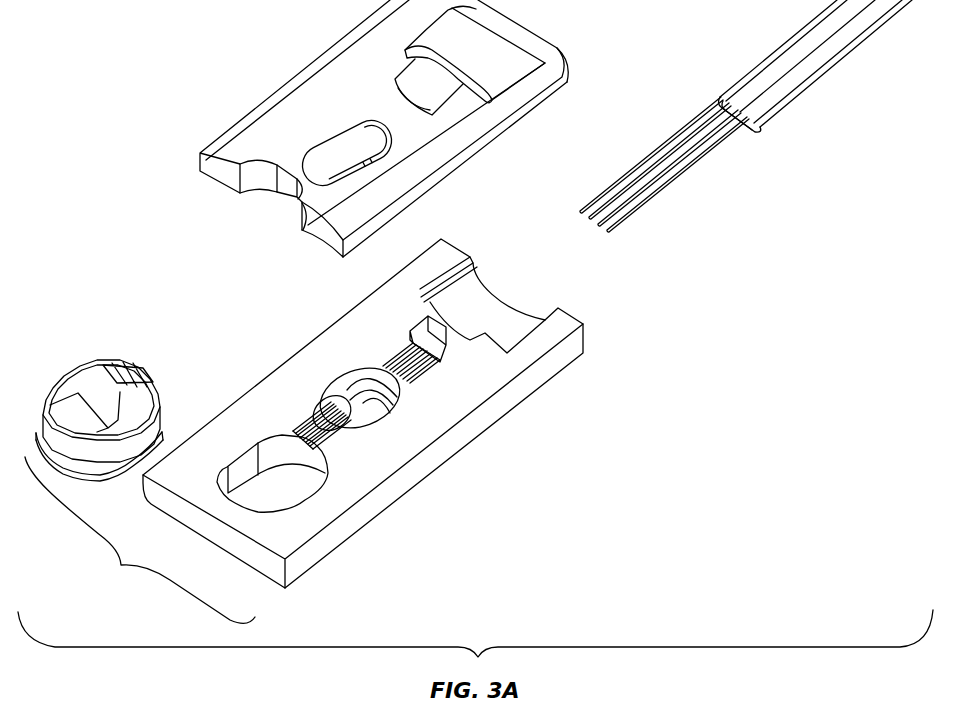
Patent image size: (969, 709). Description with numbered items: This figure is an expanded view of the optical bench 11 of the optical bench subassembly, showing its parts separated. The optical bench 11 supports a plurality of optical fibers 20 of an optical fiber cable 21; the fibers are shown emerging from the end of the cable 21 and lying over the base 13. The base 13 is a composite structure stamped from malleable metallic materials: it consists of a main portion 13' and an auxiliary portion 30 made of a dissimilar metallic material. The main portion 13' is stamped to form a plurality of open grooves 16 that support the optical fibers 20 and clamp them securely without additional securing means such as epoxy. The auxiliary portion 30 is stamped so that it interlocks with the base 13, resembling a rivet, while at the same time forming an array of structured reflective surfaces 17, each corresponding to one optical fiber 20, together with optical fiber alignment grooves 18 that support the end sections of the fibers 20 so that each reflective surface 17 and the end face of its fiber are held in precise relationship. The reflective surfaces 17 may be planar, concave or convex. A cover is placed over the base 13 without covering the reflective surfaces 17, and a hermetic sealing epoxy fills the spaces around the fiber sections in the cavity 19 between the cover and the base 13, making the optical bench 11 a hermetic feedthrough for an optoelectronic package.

The optical bench 11 is at (163, 177).
The base 13 is at (140, 540).
The main portion 13' is at (377, 413).
The open grooves 16 is at (393, 350).
The structured reflective surfaces 17 is at (82, 400).
The optical fiber alignment grooves 18 is at (113, 363).
The cavity 19 is at (375, 400).
The optical fibers 20 is at (670, 187).
The optical fiber cable 21 is at (821, 78).
The auxiliary portion 30 is at (160, 412).